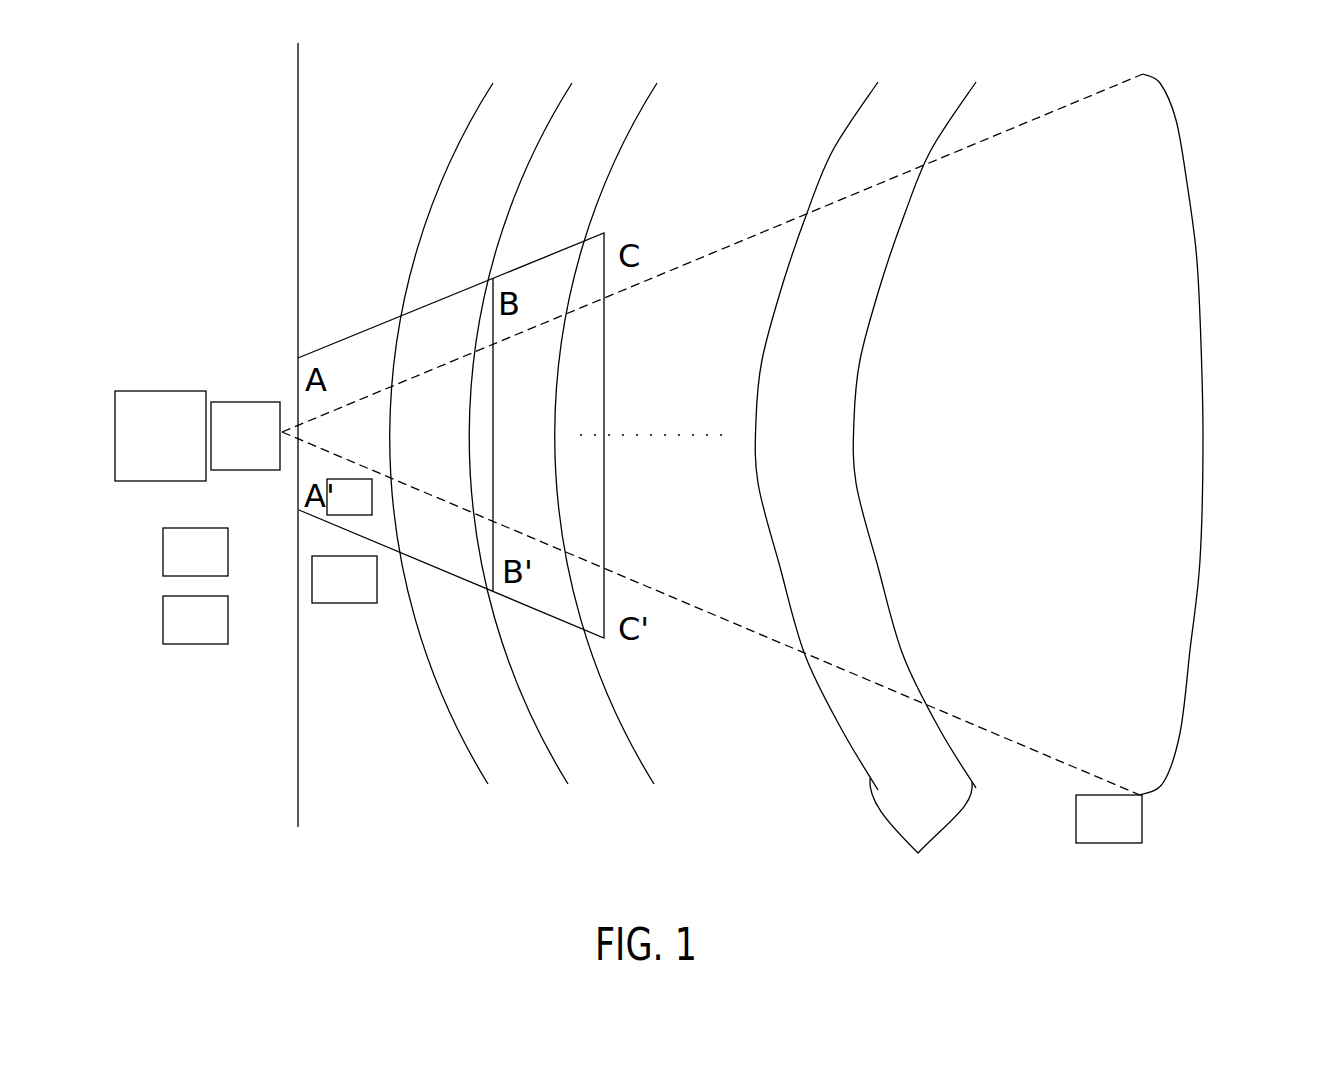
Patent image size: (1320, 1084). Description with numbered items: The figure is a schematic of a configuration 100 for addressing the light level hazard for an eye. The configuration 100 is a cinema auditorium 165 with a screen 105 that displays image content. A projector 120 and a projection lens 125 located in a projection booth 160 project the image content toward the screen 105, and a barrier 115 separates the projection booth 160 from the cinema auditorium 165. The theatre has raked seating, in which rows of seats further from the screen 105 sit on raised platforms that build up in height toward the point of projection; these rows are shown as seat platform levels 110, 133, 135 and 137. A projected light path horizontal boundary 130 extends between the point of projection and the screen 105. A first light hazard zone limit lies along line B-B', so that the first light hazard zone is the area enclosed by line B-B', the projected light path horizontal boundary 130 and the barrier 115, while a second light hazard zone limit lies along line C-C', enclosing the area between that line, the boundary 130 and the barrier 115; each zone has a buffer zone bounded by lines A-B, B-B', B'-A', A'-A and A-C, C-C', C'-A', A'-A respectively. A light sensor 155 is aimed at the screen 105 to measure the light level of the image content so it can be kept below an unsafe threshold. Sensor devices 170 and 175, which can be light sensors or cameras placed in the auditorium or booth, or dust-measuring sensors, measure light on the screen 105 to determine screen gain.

The configuration 100 is at (178, 126).
The screen 105 is at (1210, 219).
The seat platform level 110 is at (865, 487).
The barrier 115 is at (298, 784).
The projector 120 is at (176, 456).
The projection lens 125 is at (261, 456).
The projected light path horizontal boundary 130 is at (1070, 103).
The seat platform level 133 is at (488, 784).
The seat platform level 135 is at (568, 784).
The seat platform level 137 is at (654, 784).
The light sensor 155 is at (366, 512).
The projection booth 160 is at (210, 567).
The cinema auditorium 165 is at (1123, 835).
The sensor device 170 is at (210, 635).
The sensor device 175 is at (358, 593).